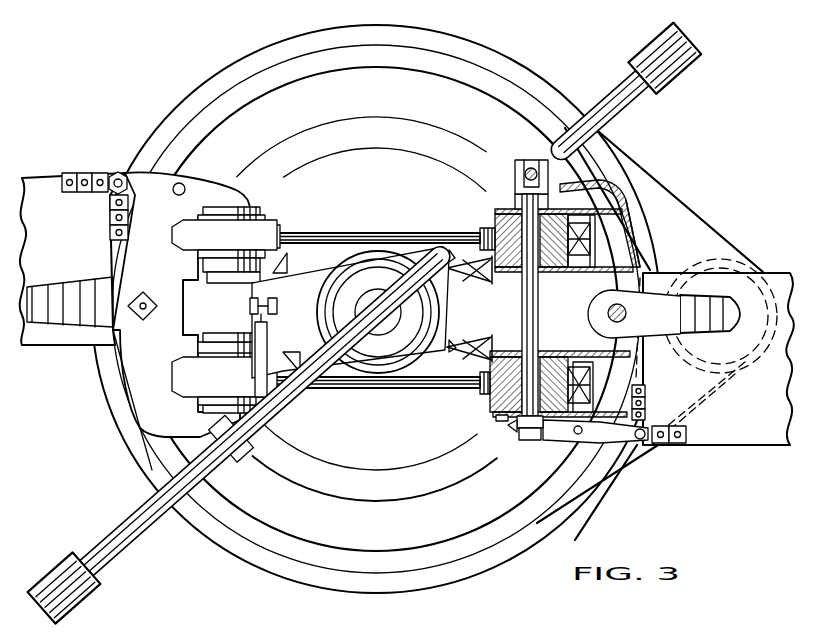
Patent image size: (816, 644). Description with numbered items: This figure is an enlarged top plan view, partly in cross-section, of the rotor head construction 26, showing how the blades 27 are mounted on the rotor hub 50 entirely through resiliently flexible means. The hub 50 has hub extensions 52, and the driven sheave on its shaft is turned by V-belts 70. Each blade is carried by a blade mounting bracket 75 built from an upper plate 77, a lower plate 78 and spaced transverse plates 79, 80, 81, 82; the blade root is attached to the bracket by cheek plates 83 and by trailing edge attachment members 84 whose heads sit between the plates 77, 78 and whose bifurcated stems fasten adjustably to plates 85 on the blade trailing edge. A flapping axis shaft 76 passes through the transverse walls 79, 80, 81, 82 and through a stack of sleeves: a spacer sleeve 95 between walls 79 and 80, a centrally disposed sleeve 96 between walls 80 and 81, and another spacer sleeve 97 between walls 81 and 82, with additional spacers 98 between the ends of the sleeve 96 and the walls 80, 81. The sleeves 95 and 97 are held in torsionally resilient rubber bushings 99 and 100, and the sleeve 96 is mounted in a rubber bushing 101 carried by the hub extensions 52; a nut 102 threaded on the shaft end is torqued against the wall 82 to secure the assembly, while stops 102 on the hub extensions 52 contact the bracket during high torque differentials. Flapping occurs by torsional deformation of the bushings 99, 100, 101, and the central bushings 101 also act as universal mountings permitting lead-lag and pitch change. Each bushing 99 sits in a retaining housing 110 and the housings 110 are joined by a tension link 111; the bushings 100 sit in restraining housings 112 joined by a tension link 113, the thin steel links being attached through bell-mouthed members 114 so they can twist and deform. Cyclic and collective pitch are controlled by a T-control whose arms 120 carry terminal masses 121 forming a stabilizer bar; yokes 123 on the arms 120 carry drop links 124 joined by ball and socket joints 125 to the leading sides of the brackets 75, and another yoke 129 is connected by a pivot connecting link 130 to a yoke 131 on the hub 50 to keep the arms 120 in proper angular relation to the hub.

The rotor head construction 26 is at (373, 219).
The blades 27 is at (44, 186).
The rotor hub 50 is at (328, 236).
The hub extensions 52 is at (192, 317).
The V-belts 70 is at (658, 192).
The blade mounting brackets 75 is at (208, 181).
The flapping axis shafts 76 is at (515, 428).
The upper plate 77 is at (128, 385).
The lower plate 78 is at (645, 253).
The transverse plate 79 is at (578, 210).
The transverse plate 80 is at (600, 266).
The transverse plate 81 is at (638, 352).
The transverse plate 82 is at (608, 407).
The cheek plates 83 is at (68, 292).
The trailing edge attachment members 84 is at (123, 176).
The plates 85 is at (660, 447).
The spacer sleeve 95 is at (518, 206).
The centrally disposed sleeve 96 is at (490, 296).
The spacer sleeve 97 is at (497, 418).
The spacers 98 is at (634, 316).
The torsionally resilient flexible bushing 99 is at (572, 190).
The torsionally resilient flexible bushing 100 is at (541, 446).
The bushing 101 is at (490, 321).
The nut 102 is at (283, 266).
The retaining housing 110 is at (494, 224).
The tension link 111 is at (410, 236).
The restraining housings 112 is at (190, 402).
The tension link 113 is at (384, 388).
The members 114 is at (480, 234).
The arms 120 is at (130, 531).
The terminal masses 121 is at (88, 590).
The yokes 123 is at (250, 458).
The drop links 124 is at (522, 178).
The ball and socket joints 125 is at (531, 166).
The yoke 129 is at (272, 428).
The pivot connecting link 130 is at (267, 338).
The yoke 131 is at (250, 307).